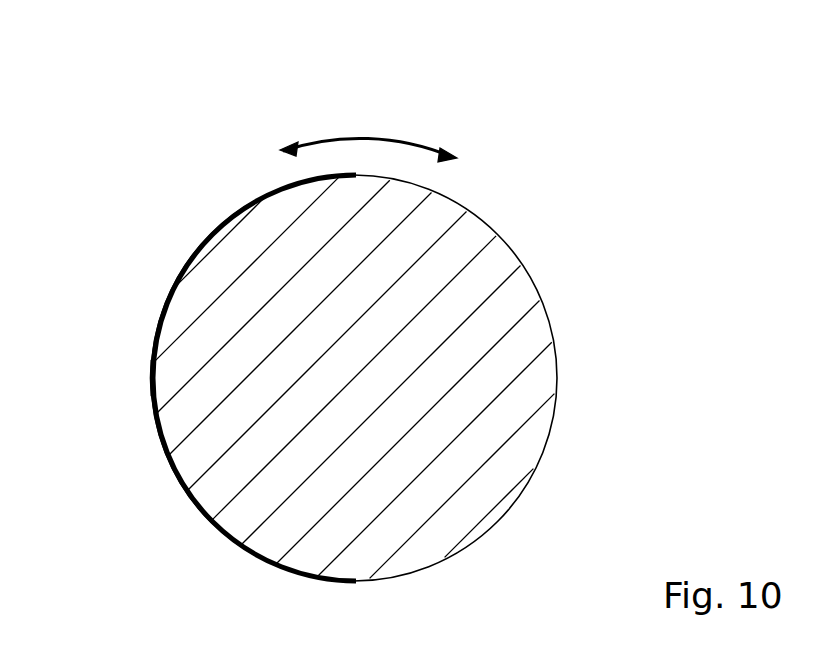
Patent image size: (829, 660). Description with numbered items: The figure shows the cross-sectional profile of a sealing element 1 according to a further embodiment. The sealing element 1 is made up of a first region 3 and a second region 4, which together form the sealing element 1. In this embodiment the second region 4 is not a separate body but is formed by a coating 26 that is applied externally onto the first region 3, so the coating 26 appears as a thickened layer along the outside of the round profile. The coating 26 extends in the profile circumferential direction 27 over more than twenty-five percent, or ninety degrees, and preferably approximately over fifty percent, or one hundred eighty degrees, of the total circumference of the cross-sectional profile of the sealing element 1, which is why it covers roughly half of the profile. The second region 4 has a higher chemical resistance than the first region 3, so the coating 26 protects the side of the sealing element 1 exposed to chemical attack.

The sealing element 1 is at (165, 215).
The first region 3 is at (532, 378).
The second region 4 is at (153, 377).
The coating 26 is at (173, 290).
The profile circumferential direction 27 is at (368, 138).